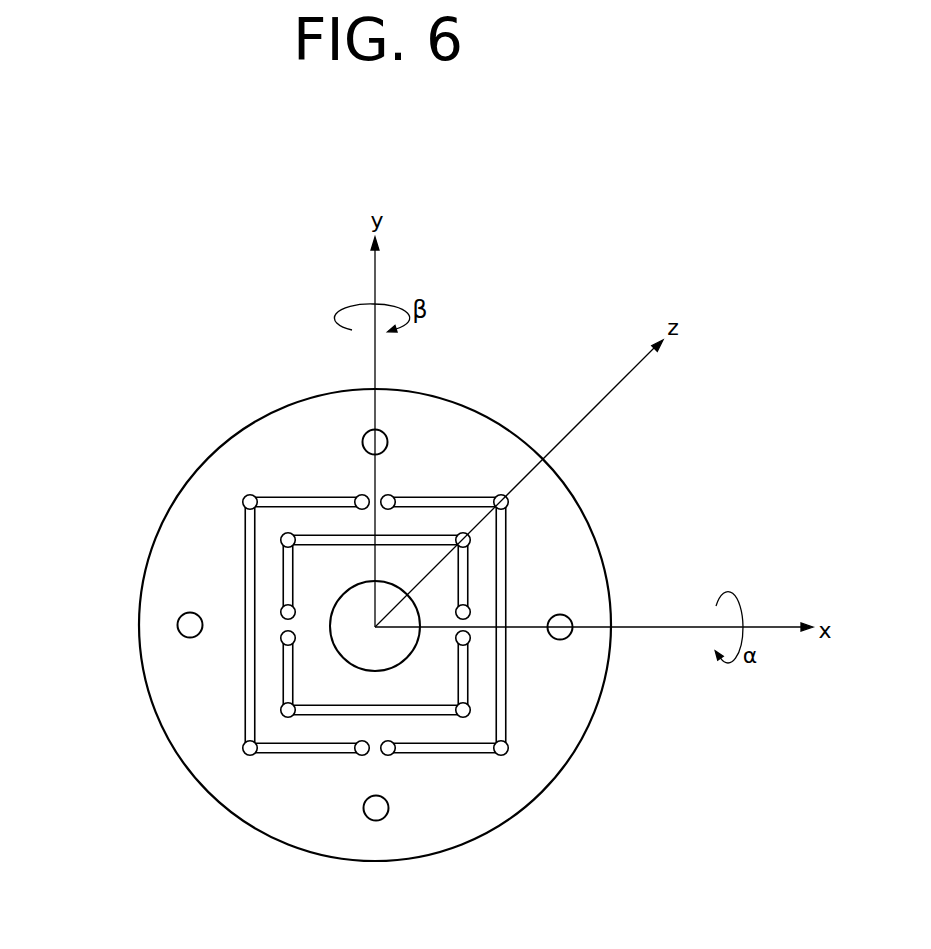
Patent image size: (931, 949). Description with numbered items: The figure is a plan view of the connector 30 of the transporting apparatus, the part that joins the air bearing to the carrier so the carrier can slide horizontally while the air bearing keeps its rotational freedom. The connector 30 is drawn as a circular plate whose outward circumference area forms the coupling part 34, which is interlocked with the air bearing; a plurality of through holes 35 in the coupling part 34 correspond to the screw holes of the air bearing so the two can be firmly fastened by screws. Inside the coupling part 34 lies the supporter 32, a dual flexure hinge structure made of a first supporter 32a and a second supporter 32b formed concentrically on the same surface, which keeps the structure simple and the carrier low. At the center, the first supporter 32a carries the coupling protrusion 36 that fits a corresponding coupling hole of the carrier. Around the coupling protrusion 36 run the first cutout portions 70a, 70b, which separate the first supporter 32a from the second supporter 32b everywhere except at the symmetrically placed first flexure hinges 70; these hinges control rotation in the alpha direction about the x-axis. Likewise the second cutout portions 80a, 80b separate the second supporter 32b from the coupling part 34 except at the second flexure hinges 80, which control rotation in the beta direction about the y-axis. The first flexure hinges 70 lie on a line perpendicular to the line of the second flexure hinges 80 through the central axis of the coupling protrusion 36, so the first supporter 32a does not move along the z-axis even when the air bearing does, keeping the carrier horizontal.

The connector 30 is at (352, 603).
The supporter 32 is at (168, 604).
The first supporter 32a is at (310, 580).
The second supporter 32b is at (272, 668).
The coupling part 34 is at (205, 760).
The through holes 35 is at (568, 634).
The coupling protrusion 36 is at (398, 615).
The first flexure hinge 70 is at (404, 645).
The first cutout portion 70a is at (465, 688).
The first cutout portion 70b is at (315, 540).
The second flexure hinge 80 is at (410, 634).
The second cutout portion 80a is at (440, 748).
The second cutout portion 80b is at (450, 500).